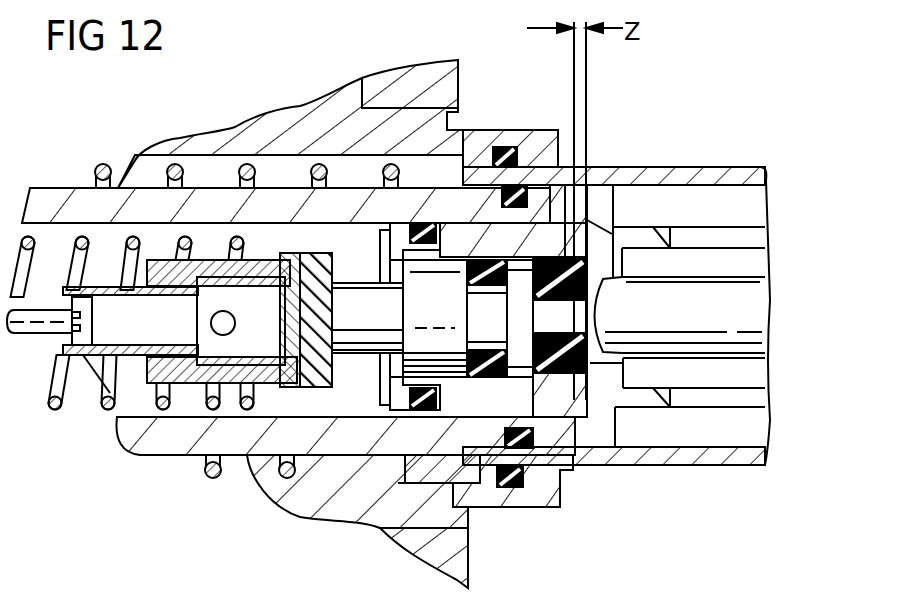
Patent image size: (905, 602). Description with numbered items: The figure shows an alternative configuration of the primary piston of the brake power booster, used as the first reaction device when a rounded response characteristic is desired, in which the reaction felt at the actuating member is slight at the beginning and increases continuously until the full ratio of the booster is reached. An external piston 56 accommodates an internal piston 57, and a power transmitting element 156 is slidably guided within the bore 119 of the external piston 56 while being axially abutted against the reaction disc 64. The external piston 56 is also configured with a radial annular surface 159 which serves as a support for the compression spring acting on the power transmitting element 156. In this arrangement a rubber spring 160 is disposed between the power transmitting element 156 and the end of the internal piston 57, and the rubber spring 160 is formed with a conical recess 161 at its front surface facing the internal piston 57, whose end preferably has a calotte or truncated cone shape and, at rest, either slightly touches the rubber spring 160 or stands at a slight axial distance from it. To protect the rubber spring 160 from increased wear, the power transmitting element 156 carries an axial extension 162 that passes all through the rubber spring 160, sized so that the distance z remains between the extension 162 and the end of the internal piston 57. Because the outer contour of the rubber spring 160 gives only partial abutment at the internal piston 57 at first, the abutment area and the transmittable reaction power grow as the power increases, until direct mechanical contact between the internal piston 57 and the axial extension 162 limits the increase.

The external piston 56 is at (482, 237).
The internal piston 57 is at (710, 303).
The reaction disc 64 is at (317, 377).
The bore 119 is at (457, 377).
The power transmitting element 156 is at (365, 340).
The radial annular surface 159 is at (590, 363).
The rubber spring 160 is at (524, 232).
The conical recess 161 is at (612, 185).
The axial extension 162 is at (566, 377).